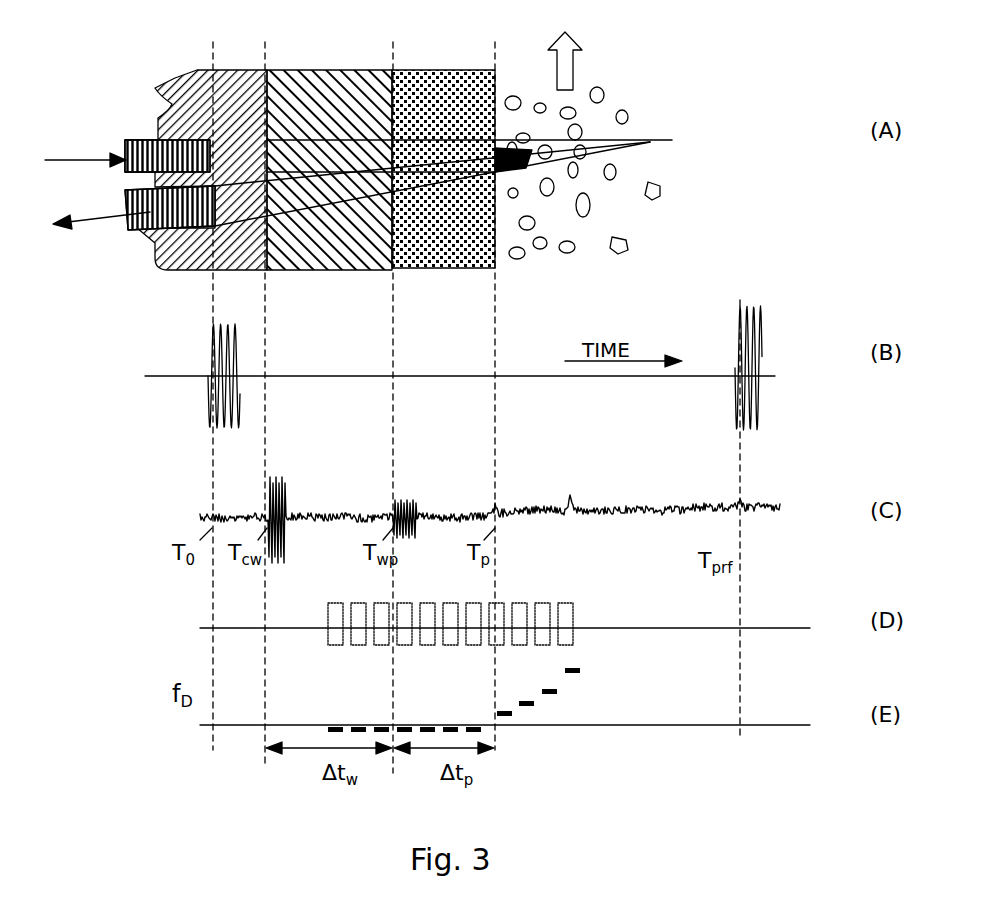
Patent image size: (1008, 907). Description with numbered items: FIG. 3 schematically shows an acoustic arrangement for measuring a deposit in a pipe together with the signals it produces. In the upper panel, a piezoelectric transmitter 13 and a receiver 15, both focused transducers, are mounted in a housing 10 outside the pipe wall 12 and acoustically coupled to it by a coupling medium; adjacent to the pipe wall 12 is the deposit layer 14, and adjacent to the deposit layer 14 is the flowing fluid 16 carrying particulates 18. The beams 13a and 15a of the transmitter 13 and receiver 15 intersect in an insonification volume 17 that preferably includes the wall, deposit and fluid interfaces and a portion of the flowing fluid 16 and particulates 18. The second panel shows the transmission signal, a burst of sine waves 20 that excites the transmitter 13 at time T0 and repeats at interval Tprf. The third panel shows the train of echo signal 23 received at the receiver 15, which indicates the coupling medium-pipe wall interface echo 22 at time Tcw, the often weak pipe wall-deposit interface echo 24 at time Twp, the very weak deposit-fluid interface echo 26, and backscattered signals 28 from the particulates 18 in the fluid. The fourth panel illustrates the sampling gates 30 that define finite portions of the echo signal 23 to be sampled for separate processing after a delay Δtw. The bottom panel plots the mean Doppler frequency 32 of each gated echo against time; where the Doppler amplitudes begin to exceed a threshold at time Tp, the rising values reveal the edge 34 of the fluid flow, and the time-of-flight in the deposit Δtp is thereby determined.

The housing body 10 is at (197, 92).
The pipe wall 12 is at (288, 98).
The piezoelectric transmitter 13 is at (155, 150).
The transmitter beam 13a is at (305, 135).
The deposit layer 14 is at (442, 98).
The receiver 15 is at (160, 215).
The receiver beam 15a is at (283, 210).
The flowing fluid 16 is at (598, 118).
The insonification volume 17 is at (433, 170).
The particulates 18 is at (628, 245).
The burst of sine waves 20 is at (218, 357).
The coupling medium-pipe wall interface echo 22 is at (284, 492).
The echo signal 23 is at (232, 504).
The pipe wall-deposit interface echo 24 is at (400, 492).
The deposit-fluid interface echo 26 is at (497, 508).
The backscattered signals 28 is at (572, 503).
The sampling gates 30 is at (360, 625).
The mean Doppler frequency 32 is at (391, 745).
The edge of the fluid flow 34 is at (500, 714).